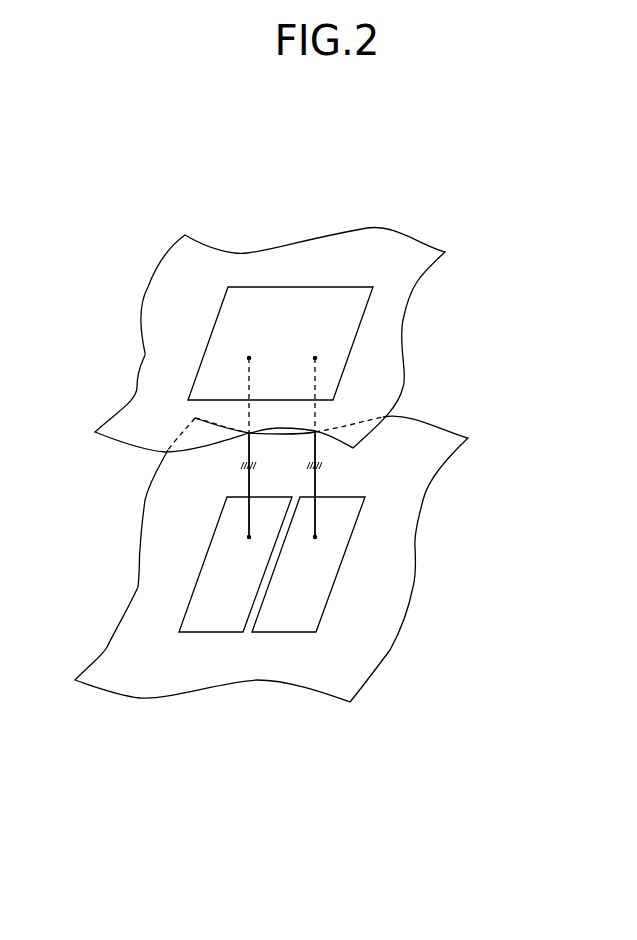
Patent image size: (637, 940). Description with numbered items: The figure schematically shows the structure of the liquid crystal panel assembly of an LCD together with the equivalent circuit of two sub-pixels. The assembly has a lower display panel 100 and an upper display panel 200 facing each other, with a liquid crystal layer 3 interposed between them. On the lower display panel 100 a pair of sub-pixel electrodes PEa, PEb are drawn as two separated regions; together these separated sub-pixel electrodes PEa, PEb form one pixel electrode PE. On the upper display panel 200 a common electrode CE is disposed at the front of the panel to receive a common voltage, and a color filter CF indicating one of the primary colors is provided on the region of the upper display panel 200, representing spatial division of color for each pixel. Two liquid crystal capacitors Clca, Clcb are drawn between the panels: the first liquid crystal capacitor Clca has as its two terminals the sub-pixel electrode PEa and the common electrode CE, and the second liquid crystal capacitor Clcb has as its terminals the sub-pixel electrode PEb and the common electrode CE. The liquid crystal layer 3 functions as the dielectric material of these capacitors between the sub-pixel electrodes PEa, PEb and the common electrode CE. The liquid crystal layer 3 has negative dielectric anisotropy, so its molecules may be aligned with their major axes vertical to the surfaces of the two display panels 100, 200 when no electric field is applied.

The liquid crystal layer 3 is at (96, 512).
The upper display panel 200 is at (415, 358).
The common electrode CE is at (400, 322).
The color filter CF is at (347, 362).
The lower display panel 100 is at (429, 548).
The liquid crystal capacitor Clca is at (270, 447).
The liquid crystal capacitor Clcb is at (337, 447).
The pixel electrode PE is at (183, 752).
The sub-pixel electrode PEa is at (210, 632).
The sub-pixel electrode PEb is at (283, 632).